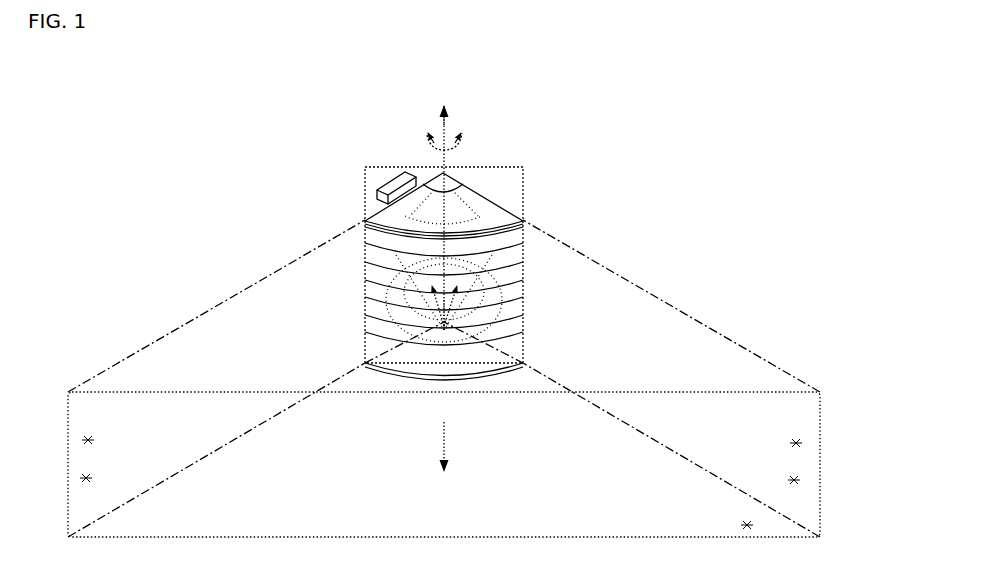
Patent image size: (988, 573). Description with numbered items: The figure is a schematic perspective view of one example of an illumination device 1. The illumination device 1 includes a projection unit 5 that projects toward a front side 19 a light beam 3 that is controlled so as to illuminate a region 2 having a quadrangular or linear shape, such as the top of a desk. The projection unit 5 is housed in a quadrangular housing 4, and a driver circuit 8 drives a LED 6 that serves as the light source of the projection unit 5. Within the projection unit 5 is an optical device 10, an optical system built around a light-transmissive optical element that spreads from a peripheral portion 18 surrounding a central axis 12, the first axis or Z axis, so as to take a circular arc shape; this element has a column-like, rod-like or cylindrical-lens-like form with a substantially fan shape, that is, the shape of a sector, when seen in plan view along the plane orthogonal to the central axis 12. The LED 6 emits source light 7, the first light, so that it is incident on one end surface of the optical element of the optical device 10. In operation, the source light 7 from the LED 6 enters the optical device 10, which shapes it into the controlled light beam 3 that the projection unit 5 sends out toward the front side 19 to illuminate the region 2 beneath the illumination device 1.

The illumination device 1 is at (572, 183).
The region 2 is at (770, 425).
The light 3 is at (710, 350).
The quadrangular housing 4 is at (363, 202).
The projection unit 5 is at (490, 198).
The LED 6 is at (446, 320).
The source light 7 is at (458, 298).
The driver circuit 8 is at (400, 182).
The optical device 10 is at (533, 257).
The central axis 12 is at (446, 115).
The peripheral portion 18 is at (466, 143).
The front side 19 is at (440, 442).